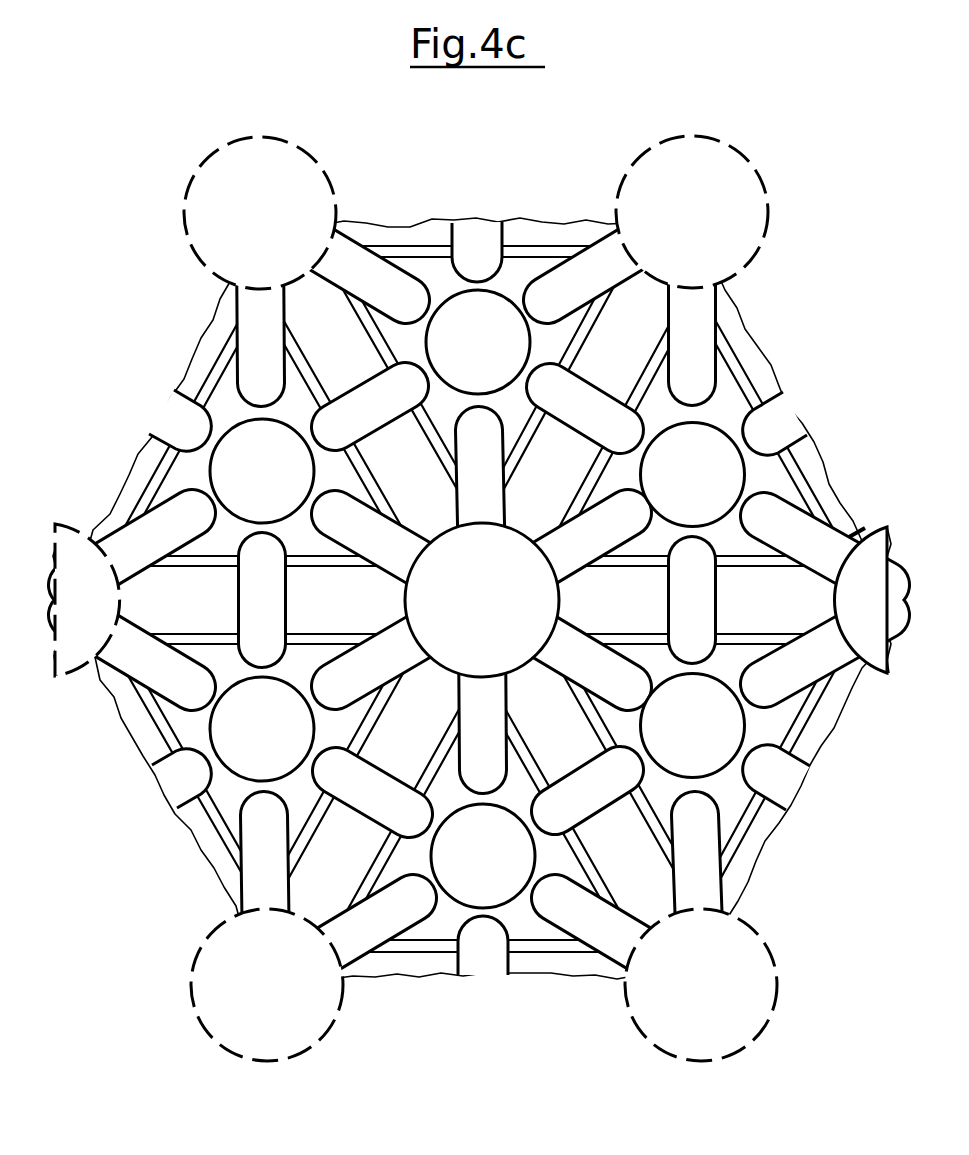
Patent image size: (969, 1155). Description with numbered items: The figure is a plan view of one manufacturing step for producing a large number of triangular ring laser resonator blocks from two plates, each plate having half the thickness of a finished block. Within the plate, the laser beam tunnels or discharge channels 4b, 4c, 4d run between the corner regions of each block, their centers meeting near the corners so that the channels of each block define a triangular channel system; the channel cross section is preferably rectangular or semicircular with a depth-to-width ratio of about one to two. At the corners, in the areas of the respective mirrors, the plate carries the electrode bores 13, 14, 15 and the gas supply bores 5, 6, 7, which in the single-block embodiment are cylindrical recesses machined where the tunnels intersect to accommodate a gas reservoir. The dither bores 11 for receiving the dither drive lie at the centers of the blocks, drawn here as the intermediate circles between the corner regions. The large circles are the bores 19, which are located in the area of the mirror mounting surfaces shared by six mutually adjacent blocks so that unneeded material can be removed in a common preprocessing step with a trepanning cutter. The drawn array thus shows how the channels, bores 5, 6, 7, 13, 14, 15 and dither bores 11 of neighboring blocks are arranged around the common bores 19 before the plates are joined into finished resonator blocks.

The bore 19 is at (760, 248).
The gas supply bore 5 is at (700, 318).
The discharge channel 4b is at (742, 368).
The discharge channel 4c is at (734, 565).
The truss strut 4d is at (643, 374).
The electrode bore 13 is at (795, 410).
The dither bore 11 is at (736, 470).
The gas supply bore 6 is at (844, 522).
The gas supply bore 7 is at (566, 560).
The electrode bore 14 is at (574, 426).
The electrode bore 15 is at (688, 562).